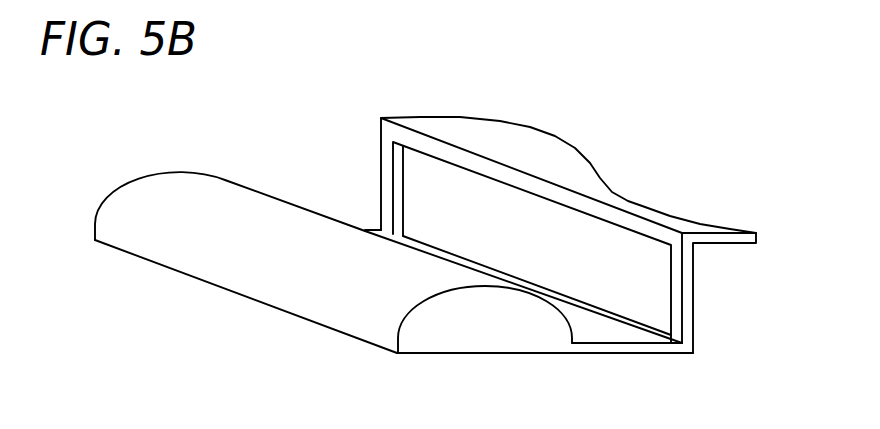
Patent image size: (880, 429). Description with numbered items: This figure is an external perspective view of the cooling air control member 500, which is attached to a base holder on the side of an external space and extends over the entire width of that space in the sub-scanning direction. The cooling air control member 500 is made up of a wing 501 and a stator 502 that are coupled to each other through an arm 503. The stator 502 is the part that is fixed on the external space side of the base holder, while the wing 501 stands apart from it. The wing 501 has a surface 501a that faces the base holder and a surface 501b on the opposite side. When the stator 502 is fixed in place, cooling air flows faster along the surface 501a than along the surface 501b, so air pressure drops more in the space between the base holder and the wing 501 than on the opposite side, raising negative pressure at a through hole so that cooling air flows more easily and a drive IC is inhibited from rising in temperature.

The cooling air control member 500 is at (402, 68).
The wing 501 is at (241, 162).
The surface facing the base holder 501a is at (147, 185).
The surface on the opposite side 501b is at (473, 353).
The stator 502 is at (537, 142).
The arm 503 is at (694, 293).